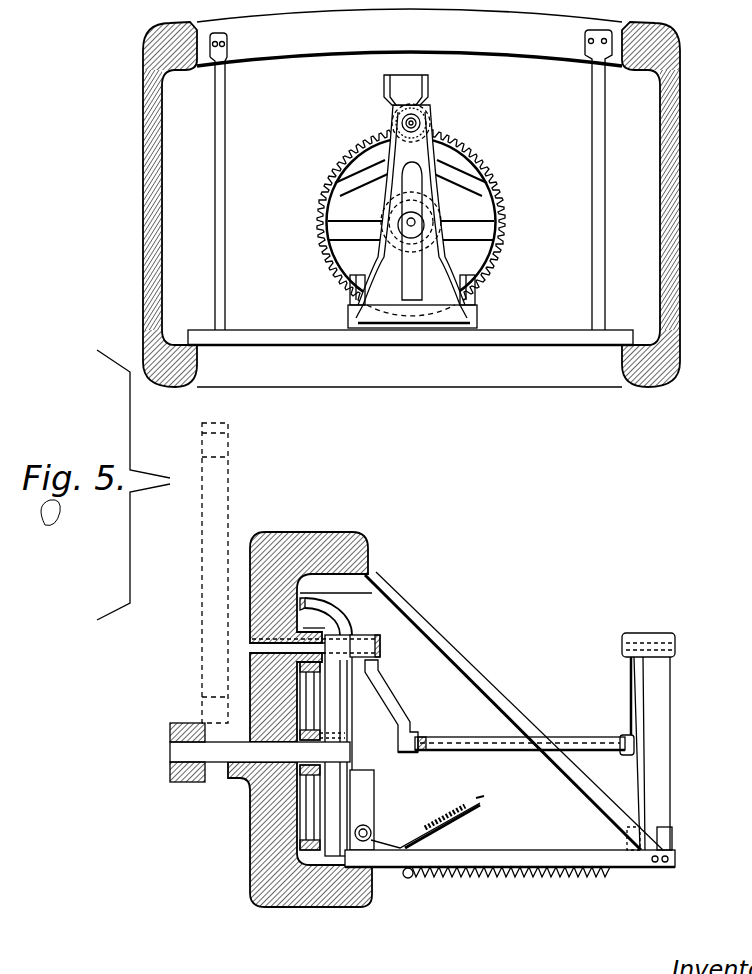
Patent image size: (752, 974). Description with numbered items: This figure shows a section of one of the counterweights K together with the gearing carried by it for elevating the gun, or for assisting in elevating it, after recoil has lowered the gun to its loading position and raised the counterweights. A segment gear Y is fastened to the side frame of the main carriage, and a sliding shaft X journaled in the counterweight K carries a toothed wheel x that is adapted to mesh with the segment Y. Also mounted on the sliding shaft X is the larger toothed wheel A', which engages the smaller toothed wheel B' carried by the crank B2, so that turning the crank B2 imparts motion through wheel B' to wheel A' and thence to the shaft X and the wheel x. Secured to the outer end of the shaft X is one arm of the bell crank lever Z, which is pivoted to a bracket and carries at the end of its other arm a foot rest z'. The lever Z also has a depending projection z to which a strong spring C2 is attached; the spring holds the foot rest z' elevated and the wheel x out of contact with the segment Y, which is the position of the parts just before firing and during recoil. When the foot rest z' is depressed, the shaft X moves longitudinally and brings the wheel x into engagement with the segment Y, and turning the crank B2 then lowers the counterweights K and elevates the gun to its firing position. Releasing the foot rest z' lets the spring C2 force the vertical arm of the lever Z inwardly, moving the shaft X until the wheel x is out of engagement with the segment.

The counterweight K is at (246, 862).
The toothed wheel A' is at (400, 489).
The smaller toothed wheel B' is at (363, 465).
The crank B2 is at (403, 716).
The segment gear Y is at (205, 598).
The sliding shaft X is at (218, 762).
The toothed wheel x is at (184, 782).
The bell crank lever Z is at (410, 840).
The foot rest z' is at (485, 785).
The depending projection z is at (396, 882).
The spring C2 is at (505, 880).